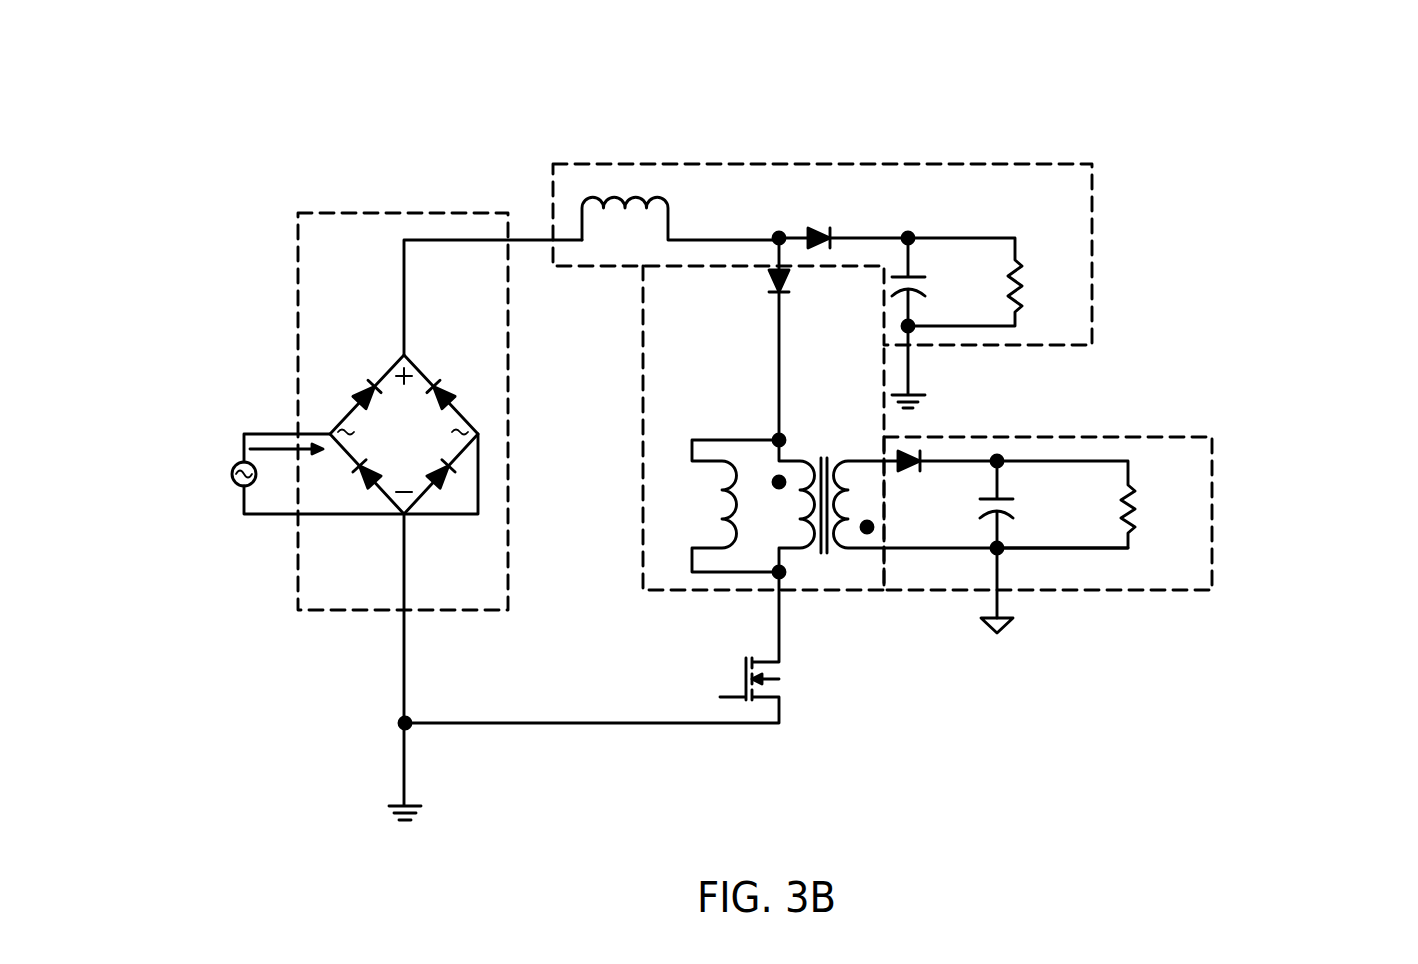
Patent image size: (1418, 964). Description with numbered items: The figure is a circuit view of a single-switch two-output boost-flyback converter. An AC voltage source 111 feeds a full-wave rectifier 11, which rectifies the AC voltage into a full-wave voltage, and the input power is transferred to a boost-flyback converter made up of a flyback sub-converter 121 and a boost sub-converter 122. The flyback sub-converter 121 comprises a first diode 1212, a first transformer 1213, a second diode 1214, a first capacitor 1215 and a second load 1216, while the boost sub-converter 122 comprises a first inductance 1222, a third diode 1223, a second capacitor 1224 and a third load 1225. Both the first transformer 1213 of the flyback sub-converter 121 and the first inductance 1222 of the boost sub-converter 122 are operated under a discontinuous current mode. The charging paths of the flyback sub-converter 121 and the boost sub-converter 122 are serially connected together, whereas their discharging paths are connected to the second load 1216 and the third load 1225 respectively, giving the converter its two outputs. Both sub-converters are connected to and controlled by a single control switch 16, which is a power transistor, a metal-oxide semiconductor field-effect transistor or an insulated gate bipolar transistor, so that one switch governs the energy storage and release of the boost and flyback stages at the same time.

The full-wave rectifier 11 is at (297, 305).
The AC voltage source 111 is at (232, 469).
The boost sub-converter 122 is at (1093, 252).
The first inductance 1222 is at (613, 196).
The third diode 1223 is at (822, 232).
The second capacitor 1224 is at (920, 277).
The third load 1225 is at (1030, 285).
The first diode 1212 is at (790, 285).
The first transformer 1213 is at (826, 565).
The control switch 16 is at (760, 680).
The flyback sub-converter 121 is at (1215, 520).
The second diode 1214 is at (925, 452).
The first capacitor 1215 is at (1012, 511).
The second load 1216 is at (1138, 505).